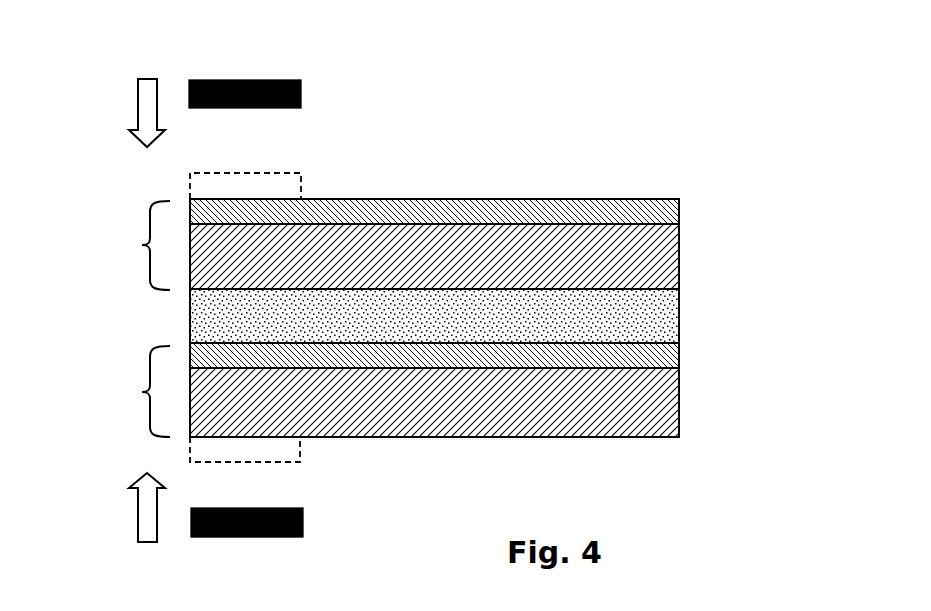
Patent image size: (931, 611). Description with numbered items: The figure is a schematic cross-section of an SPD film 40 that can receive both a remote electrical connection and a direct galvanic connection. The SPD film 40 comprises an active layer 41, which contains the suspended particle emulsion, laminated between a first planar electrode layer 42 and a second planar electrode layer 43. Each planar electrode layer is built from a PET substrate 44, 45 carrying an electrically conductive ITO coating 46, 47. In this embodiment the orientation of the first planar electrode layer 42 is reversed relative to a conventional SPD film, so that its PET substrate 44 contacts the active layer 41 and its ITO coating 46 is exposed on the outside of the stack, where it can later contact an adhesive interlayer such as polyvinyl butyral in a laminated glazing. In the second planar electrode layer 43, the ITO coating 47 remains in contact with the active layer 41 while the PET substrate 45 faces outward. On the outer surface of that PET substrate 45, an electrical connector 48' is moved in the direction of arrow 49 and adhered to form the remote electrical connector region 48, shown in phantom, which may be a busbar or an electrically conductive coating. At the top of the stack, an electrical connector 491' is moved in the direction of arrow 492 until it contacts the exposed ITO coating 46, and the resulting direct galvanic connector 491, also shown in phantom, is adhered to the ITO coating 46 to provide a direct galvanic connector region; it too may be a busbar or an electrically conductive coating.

The SPD film 40 is at (517, 250).
The active layer 41 is at (657, 318).
The first planar electrode layer 42 is at (142, 245).
The second planar electrode layer 43 is at (142, 392).
The PET substrate 44 is at (662, 262).
The PET substrate 45 is at (638, 410).
The ITO coating 46 is at (665, 211).
The ITO coating 47 is at (663, 357).
The remote electrical connector region 48 is at (322, 468).
The electrical connector 48' is at (309, 538).
The arrow 49 is at (147, 515).
The direct galvanic connector 491 is at (317, 180).
The electrical connector 491' is at (297, 100).
The arrow 492 is at (148, 110).